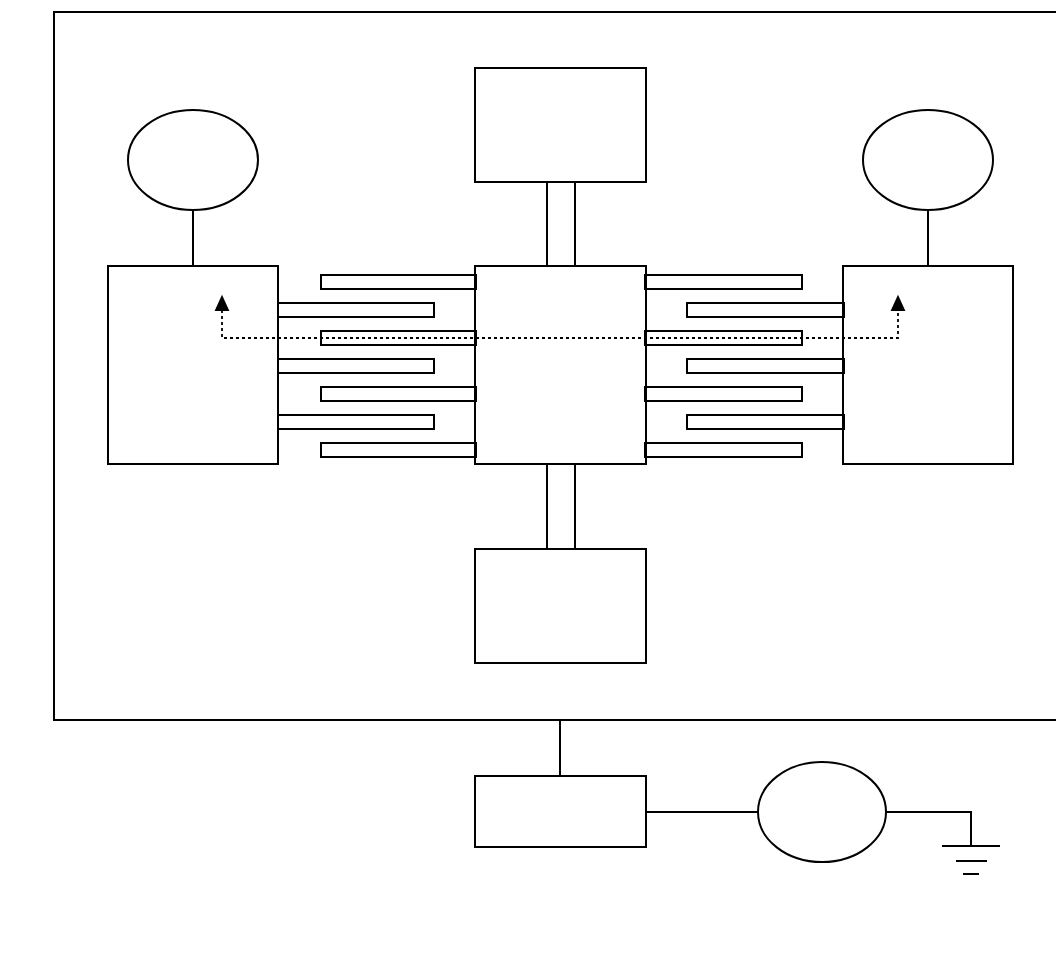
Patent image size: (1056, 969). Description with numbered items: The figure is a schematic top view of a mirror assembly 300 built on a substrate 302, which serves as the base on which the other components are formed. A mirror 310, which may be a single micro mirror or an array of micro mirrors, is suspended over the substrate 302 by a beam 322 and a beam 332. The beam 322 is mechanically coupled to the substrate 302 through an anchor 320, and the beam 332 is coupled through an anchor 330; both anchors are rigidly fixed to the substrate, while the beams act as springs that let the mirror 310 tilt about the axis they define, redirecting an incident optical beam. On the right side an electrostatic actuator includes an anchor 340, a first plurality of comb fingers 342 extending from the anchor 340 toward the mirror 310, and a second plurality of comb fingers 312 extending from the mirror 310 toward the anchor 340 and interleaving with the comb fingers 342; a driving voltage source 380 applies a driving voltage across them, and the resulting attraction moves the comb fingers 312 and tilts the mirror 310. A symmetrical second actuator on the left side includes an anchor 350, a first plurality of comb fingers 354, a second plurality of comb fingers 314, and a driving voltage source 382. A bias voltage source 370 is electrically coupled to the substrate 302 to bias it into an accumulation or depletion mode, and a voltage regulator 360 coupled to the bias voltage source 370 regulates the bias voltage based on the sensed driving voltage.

The mirror assembly 300 is at (142, 855).
The substrate 302 is at (118, 79).
The mirror 310 is at (560, 365).
The second plurality of comb fingers 312 is at (723, 368).
The second plurality of comb fingers 314 is at (398, 373).
The anchor 320 is at (560, 125).
The beam 322 is at (562, 245).
The anchor 330 is at (560, 606).
The beam 332 is at (562, 522).
The anchor 340 is at (928, 365).
The first plurality of comb fingers 342 is at (742, 423).
The anchor 350 is at (193, 365).
The first plurality of comb fingers 354 is at (321, 422).
The voltage regulator 360 is at (560, 783).
The bias voltage source 370 is at (823, 818).
The driving voltage source 380 is at (928, 188).
The driving voltage source 382 is at (193, 188).